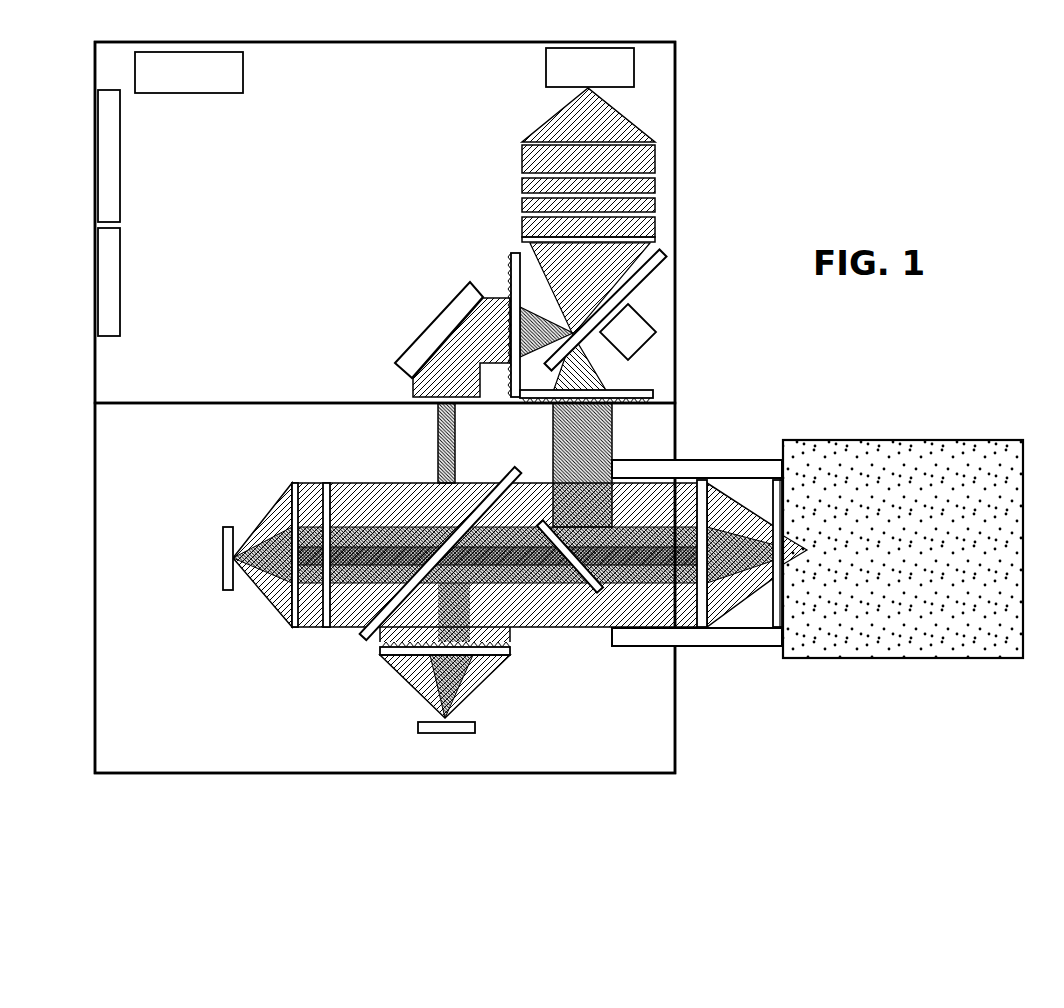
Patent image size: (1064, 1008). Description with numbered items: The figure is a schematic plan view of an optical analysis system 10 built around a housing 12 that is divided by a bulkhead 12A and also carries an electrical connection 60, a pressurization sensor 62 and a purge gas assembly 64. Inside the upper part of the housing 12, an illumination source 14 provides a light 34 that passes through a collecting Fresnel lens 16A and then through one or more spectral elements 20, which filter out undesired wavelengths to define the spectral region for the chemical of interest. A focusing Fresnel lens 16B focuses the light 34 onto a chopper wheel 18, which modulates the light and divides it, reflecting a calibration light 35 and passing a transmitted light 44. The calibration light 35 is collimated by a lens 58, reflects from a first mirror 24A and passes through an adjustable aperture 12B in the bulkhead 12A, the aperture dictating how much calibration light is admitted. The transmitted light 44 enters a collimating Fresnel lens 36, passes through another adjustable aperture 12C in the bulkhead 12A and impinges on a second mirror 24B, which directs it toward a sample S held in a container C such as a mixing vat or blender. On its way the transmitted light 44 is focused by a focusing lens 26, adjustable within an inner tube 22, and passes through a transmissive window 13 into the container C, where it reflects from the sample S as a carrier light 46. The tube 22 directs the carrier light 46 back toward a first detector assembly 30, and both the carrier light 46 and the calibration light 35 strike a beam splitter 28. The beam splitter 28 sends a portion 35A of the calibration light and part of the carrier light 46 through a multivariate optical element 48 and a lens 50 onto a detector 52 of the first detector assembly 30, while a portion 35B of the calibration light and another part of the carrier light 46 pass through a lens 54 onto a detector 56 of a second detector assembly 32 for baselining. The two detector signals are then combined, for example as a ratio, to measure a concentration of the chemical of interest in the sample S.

The optical analysis system 10 is at (705, 112).
The housing 12 is at (676, 735).
The bulkhead 12A is at (352, 402).
The adjustable aperture 12B is at (436, 428).
The adjustable aperture 12C is at (616, 433).
The transmissive window 13 is at (780, 597).
The illumination source 14 is at (580, 83).
The collecting Fresnel lens 16A is at (527, 141).
The focusing Fresnel lens 16B is at (525, 237).
The chopper wheel 18 is at (648, 266).
The spectral elements 20 is at (670, 183).
The inner tube 22 is at (695, 642).
The first mirror 24A is at (433, 318).
The second mirror 24B is at (548, 518).
The focusing lens 26 is at (707, 477).
The beam splitter 28 is at (487, 500).
The first detector assembly 30 is at (262, 462).
The second detector assembly 32 is at (495, 690).
The light 34 is at (610, 116).
The calibration light 35 is at (467, 403).
The portion of the calibration light 35A is at (413, 547).
The portion of the calibration light 35B is at (382, 656).
The collimating Fresnel lens 36 is at (662, 389).
The transmitted light 44 is at (600, 373).
The carrier light 46 is at (745, 514).
The multivariate optical element 48 is at (325, 483).
The lens 50 is at (292, 498).
The detector 52 is at (222, 543).
The lens 54 is at (512, 651).
The detector 56 is at (470, 728).
The lens 58 is at (511, 262).
The electrical connection 60 is at (108, 160).
The pressurization sensor 62 is at (180, 88).
The purge gas assembly 64 is at (108, 280).
The sample S is at (976, 484).
The container C is at (942, 440).